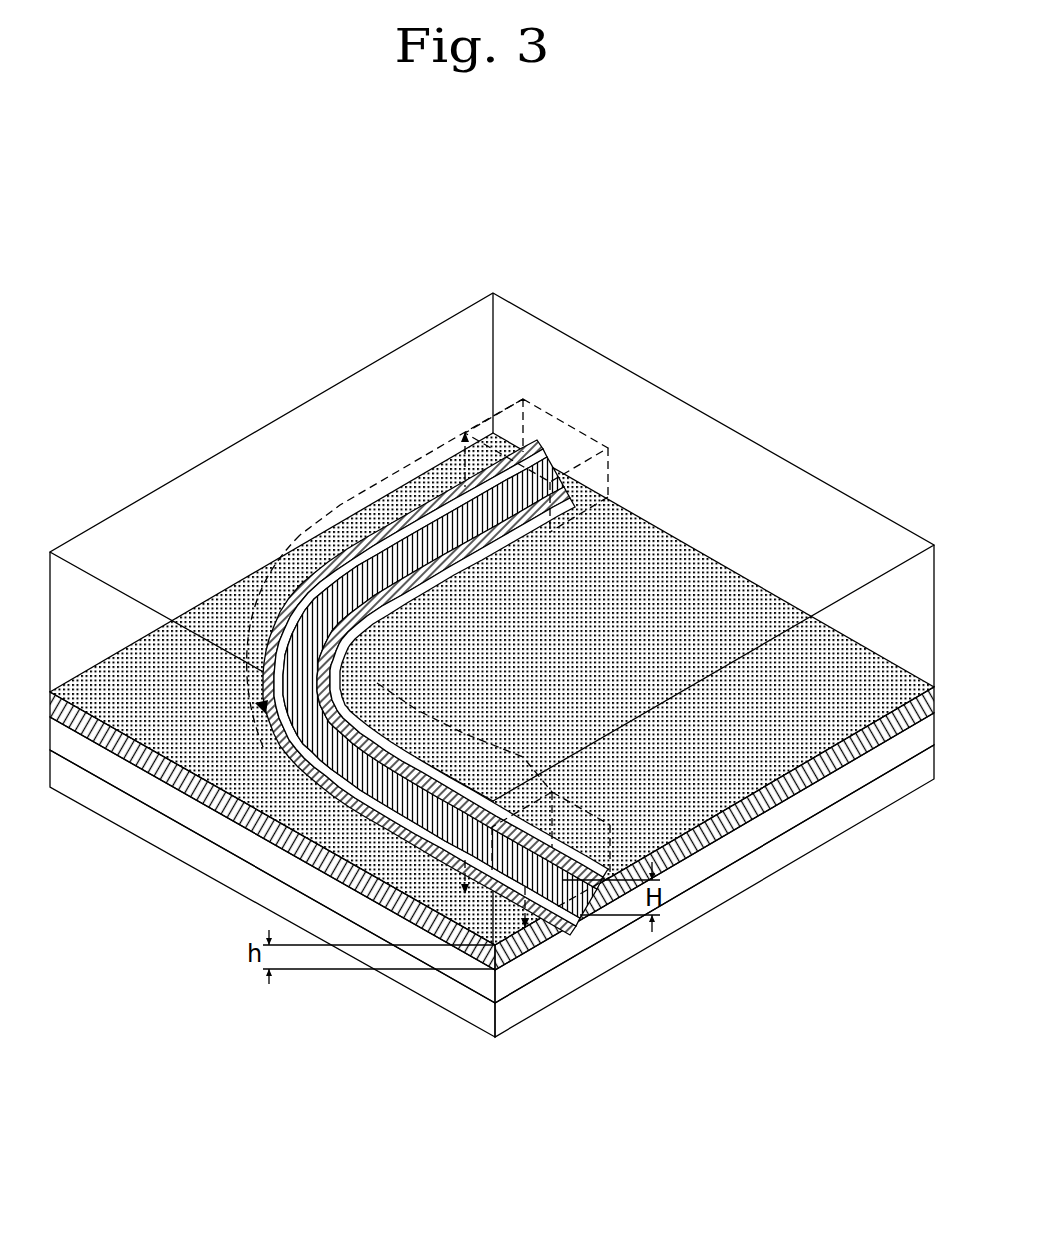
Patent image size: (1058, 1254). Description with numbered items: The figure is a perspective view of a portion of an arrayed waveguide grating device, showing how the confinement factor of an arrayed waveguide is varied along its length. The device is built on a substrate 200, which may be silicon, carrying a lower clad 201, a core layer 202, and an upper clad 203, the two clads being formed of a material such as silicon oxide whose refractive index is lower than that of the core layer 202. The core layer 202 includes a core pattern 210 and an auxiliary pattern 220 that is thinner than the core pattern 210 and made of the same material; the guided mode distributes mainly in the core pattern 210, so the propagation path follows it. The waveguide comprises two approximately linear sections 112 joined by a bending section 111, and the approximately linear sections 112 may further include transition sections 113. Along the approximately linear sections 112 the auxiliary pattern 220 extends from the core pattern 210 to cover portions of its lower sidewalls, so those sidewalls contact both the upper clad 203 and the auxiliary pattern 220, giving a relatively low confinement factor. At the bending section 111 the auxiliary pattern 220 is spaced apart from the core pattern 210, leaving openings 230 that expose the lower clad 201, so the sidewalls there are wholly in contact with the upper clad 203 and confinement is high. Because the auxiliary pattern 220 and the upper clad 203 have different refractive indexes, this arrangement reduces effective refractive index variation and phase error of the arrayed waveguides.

The bending section 111 is at (345, 503).
The approximately linear section 112 is at (610, 472).
The transition section 113 is at (485, 753).
The substrate 200 is at (773, 858).
The lower clad 201 is at (823, 793).
The core layer 202 is at (880, 736).
The upper clad 203 is at (207, 476).
The core pattern 210 is at (577, 912).
The auxiliary pattern 220 is at (523, 958).
The opening 230 is at (260, 692).